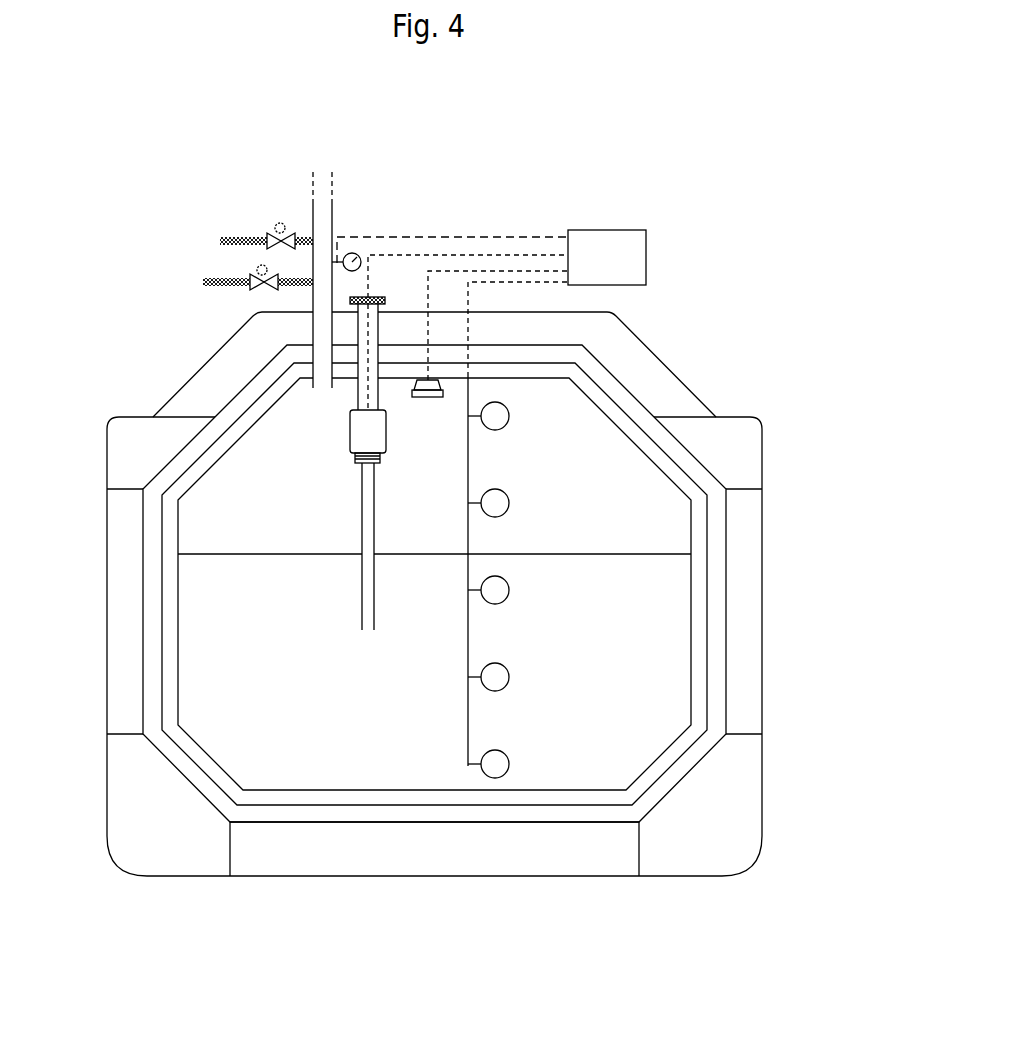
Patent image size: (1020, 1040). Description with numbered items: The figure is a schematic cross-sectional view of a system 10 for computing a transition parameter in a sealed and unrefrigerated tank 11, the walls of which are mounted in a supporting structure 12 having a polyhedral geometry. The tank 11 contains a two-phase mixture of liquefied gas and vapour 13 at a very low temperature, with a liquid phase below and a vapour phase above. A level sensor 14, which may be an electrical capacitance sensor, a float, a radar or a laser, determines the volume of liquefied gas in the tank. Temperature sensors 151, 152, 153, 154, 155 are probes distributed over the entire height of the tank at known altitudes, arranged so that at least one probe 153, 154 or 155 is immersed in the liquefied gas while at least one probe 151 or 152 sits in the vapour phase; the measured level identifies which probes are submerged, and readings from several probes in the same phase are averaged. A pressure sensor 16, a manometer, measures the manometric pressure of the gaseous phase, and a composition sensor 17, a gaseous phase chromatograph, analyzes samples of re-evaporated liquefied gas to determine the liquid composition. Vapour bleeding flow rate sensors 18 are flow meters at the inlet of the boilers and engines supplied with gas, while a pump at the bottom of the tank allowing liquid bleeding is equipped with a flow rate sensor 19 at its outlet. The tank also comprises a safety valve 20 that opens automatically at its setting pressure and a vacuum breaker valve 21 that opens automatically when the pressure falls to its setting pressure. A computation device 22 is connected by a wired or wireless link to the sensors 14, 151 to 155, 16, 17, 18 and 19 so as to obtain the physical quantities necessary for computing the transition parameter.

The system 10 is at (808, 228).
The sealed and unrefrigerated tank 11 is at (720, 394).
The supporting structure 12 is at (105, 424).
The two-phase mixture of liquefied gas and vapour 13 is at (632, 596).
The level sensor 14 is at (445, 383).
The temperature sensor 151 is at (509, 414).
The temperature sensor 152 is at (509, 501).
The temperature sensor 153 is at (509, 588).
The temperature sensor 154 is at (509, 675).
The temperature sensor 155 is at (509, 762).
The pressure sensor 16 is at (364, 242).
The composition sensor 17 is at (380, 296).
The vapour bleeding flow rate sensors 18 is at (324, 162).
The flow rate sensor 19 is at (347, 425).
The safety valve 20 is at (263, 230).
The vacuum breaker valve 21 is at (243, 270).
The computation device 22 is at (646, 240).